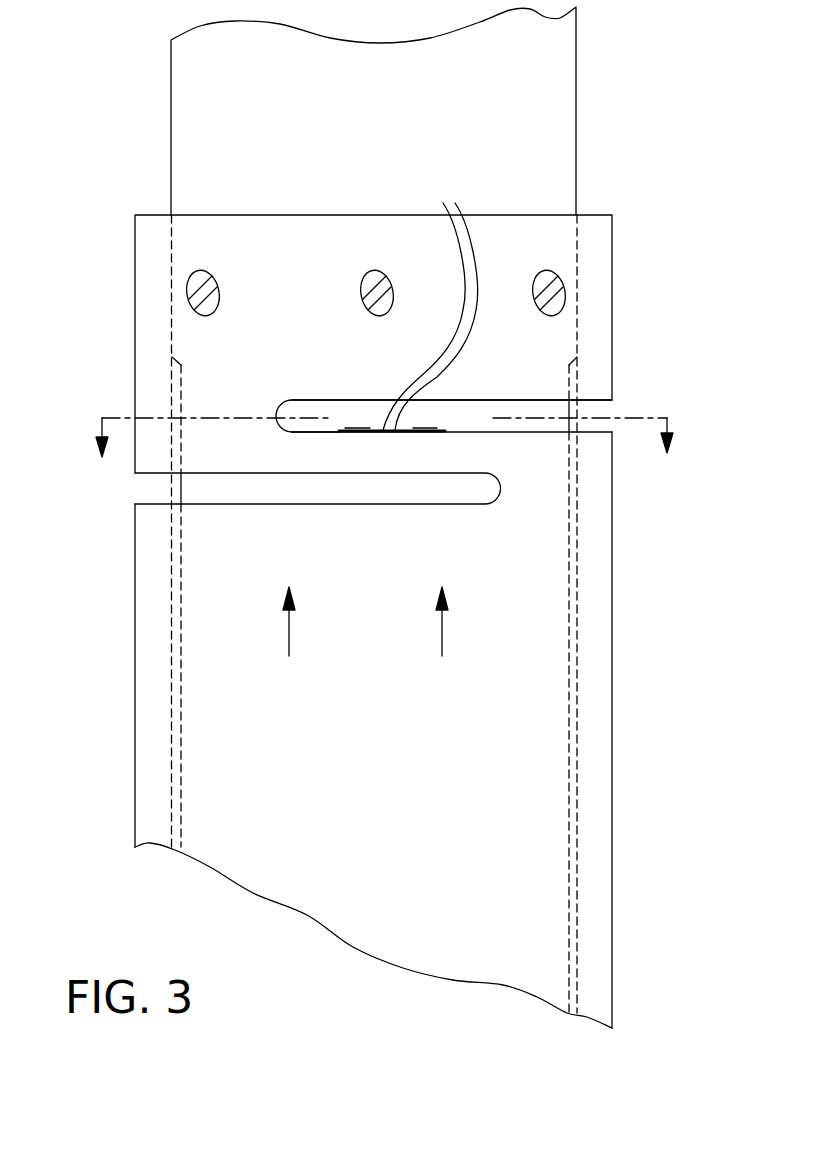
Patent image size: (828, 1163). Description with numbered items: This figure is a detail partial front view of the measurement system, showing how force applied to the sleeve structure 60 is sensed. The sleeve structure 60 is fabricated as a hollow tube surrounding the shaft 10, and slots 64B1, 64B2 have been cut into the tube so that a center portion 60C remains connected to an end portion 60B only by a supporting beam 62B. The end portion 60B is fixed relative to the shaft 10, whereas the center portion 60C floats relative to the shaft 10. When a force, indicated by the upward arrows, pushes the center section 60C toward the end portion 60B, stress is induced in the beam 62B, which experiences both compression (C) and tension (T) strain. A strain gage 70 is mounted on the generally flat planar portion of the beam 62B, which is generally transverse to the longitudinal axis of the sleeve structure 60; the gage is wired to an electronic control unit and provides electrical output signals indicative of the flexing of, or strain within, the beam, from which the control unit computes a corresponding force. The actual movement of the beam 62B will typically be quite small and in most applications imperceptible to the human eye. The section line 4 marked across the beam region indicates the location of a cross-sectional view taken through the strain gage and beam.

The shaft 10 is at (590, 96).
The sleeve structure 60 is at (390, 615).
The end portion 60B is at (195, 345).
The center portion 60C is at (207, 712).
The beam 62B is at (348, 456).
The slot 64B1 is at (598, 408).
The slot 64B2 is at (155, 487).
The strain gage 70 is at (442, 422).
The section line 4- 4 is at (383, 452).